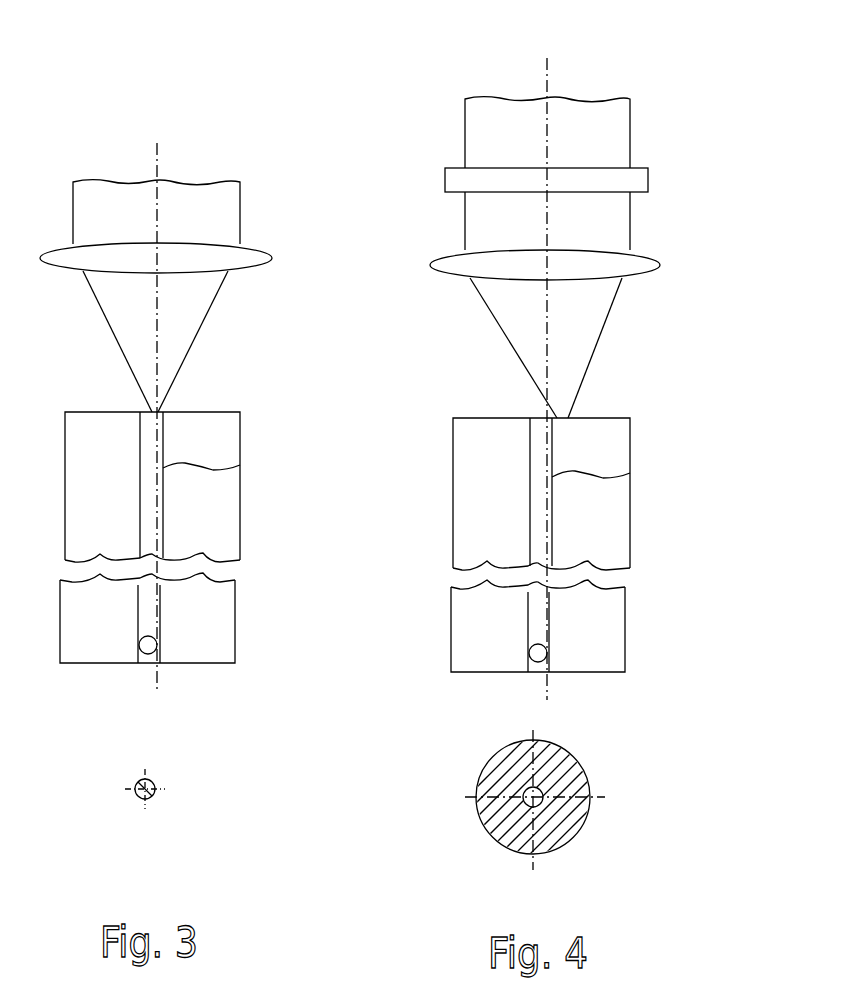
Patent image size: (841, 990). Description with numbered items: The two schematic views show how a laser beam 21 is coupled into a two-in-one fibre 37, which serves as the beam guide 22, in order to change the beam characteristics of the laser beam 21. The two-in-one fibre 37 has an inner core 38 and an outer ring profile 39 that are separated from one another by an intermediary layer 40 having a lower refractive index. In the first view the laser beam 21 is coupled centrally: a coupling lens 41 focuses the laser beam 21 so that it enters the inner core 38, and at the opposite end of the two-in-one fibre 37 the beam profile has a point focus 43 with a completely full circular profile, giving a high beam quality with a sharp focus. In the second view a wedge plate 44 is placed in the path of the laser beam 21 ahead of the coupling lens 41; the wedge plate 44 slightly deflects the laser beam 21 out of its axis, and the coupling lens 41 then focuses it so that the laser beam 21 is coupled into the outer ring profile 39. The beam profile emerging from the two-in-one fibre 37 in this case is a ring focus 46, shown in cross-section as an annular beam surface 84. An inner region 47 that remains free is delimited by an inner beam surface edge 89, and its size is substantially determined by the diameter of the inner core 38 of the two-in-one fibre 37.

In FIG. 3, the laser beam 21 is at (197, 195).
In FIG. 4, the laser beam 21 is at (585, 125).
In FIG. 3, the beam guide 22 is at (199, 508).
In FIG. 4, the beam guide 22 is at (590, 518).
In FIG. 3, the 2-in-1 fibre 37 is at (240, 508).
In FIG. 4, the 2-in-1 fibre 37 is at (630, 515).
In FIG. 3, the inner core 38 is at (152, 433).
In FIG. 4, the inner core 38 is at (540, 438).
In FIG. 3, the outer ring profile 39 is at (217, 425).
In FIG. 4, the outer ring profile 39 is at (605, 432).
In FIG. 3, the intermediary layer 40 is at (240, 465).
In FIG. 4, the intermediary layer 40 is at (630, 473).
In FIG. 3, the coupling lens 41 is at (272, 258).
In FIG. 4, the coupling lens 41 is at (660, 266).
In FIG. 3, the point focus 43 is at (151, 796).
In FIG. 4, the wedge plate 44 is at (648, 177).
In FIG. 4, the ring focus 46 is at (536, 815).
In FIG. 4, the inner region 47 is at (545, 790).
In FIG. 4, the annular beam surface 84 is at (498, 820).
In FIG. 4, the inner beam surface edge 89 is at (572, 822).